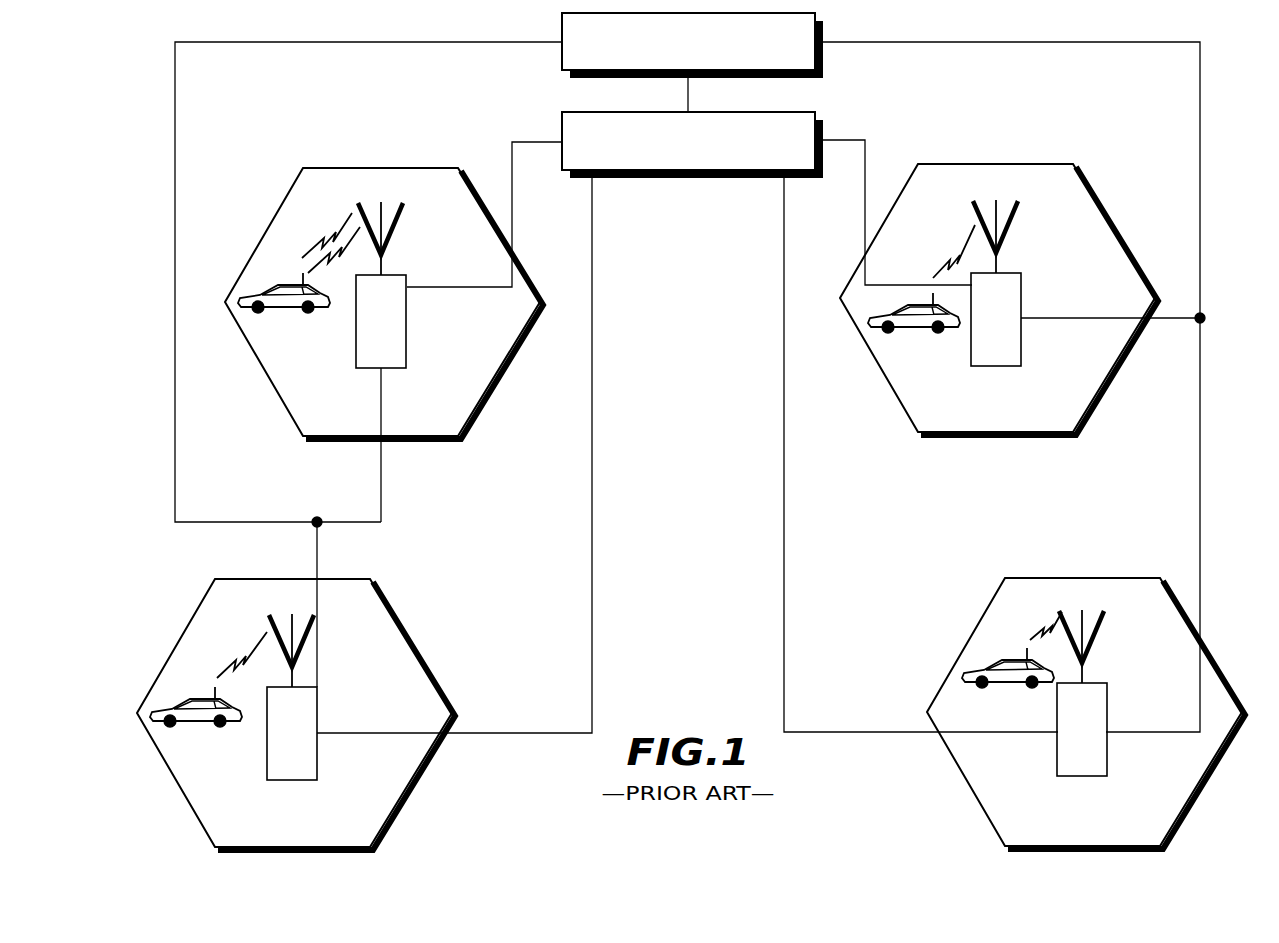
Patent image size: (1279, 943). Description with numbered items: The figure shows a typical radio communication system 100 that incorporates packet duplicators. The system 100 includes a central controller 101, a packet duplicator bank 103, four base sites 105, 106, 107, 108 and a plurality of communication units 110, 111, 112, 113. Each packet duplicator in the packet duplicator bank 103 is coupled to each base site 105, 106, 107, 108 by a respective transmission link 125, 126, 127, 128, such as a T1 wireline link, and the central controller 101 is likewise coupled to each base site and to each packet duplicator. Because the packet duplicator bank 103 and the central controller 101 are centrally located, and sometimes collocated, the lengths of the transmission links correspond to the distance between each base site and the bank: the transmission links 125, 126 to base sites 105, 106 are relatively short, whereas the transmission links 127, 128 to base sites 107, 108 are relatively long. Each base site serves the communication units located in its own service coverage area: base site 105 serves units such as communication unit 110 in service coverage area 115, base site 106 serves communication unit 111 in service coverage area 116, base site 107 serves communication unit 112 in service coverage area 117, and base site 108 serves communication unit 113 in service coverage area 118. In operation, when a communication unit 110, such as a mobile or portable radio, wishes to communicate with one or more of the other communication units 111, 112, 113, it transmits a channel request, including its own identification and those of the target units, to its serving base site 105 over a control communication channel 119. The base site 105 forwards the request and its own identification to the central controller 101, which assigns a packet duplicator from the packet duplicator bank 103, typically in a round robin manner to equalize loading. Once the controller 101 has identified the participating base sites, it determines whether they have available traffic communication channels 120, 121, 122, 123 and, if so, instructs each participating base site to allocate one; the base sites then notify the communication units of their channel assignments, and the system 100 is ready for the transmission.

The radio communication system 100 is at (673, 717).
The central controller 101 is at (822, 61).
The packet duplicator bank 103 is at (684, 178).
The base site 105 is at (408, 353).
The base site 106 is at (1022, 352).
The base site 107 is at (318, 763).
The base site 108 is at (1108, 763).
The communication unit 110 is at (280, 313).
The communication unit 111 is at (910, 333).
The communication unit 112 is at (191, 726).
The communication unit 113 is at (1002, 688).
The service coverage area 115 is at (381, 166).
The service coverage area 116 is at (995, 163).
The service coverage area 117 is at (232, 579).
The service coverage area 118 is at (1144, 577).
The control communication channel 119 is at (337, 256).
The traffic communication channel 120 is at (314, 243).
The traffic communication channel 121 is at (945, 262).
The traffic communication channel 122 is at (228, 665).
The traffic communication channel 123 is at (1046, 619).
The transmission link 125 is at (511, 141).
The transmission link 126 is at (866, 139).
The transmission link 127 is at (594, 482).
The transmission link 128 is at (783, 483).